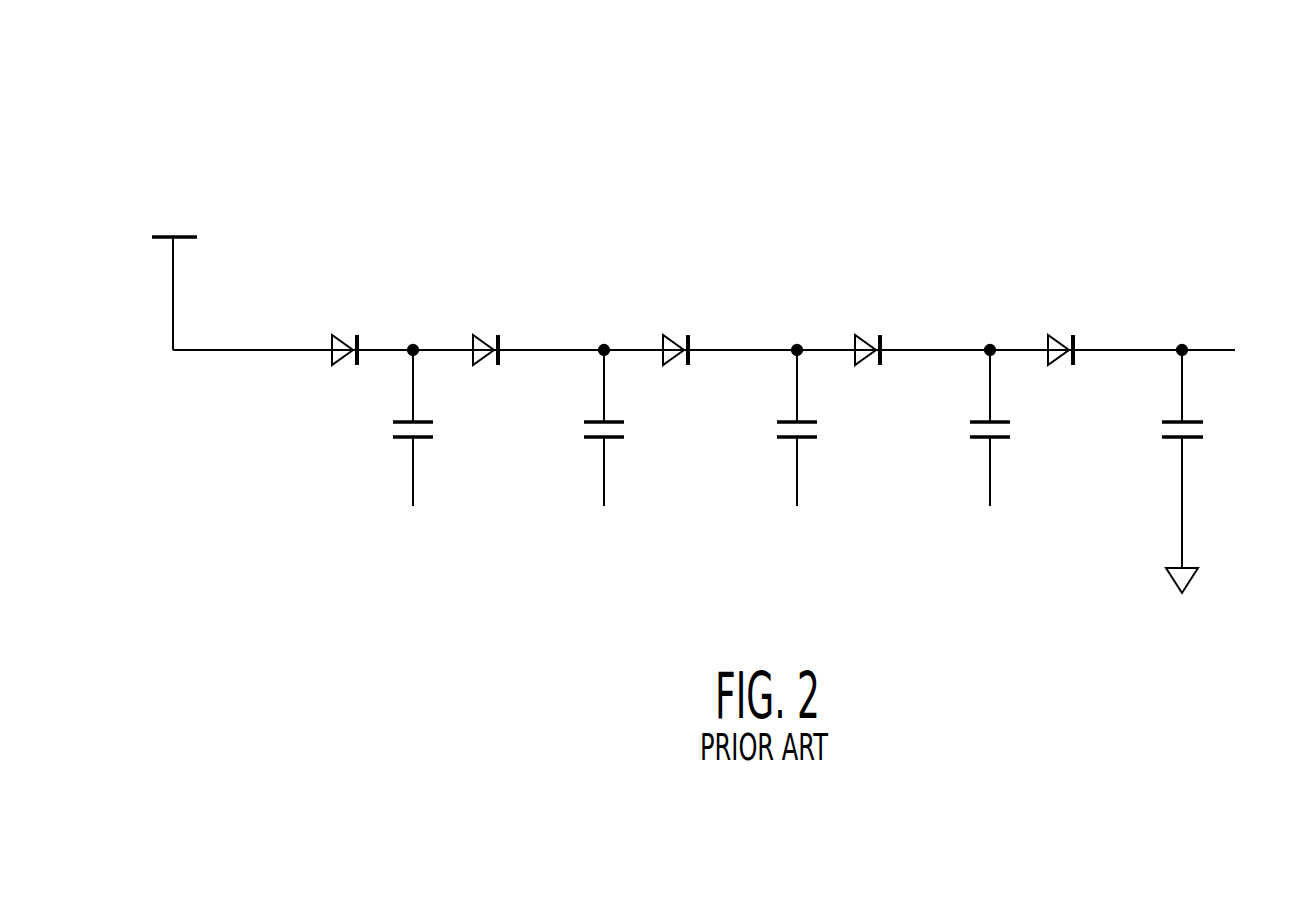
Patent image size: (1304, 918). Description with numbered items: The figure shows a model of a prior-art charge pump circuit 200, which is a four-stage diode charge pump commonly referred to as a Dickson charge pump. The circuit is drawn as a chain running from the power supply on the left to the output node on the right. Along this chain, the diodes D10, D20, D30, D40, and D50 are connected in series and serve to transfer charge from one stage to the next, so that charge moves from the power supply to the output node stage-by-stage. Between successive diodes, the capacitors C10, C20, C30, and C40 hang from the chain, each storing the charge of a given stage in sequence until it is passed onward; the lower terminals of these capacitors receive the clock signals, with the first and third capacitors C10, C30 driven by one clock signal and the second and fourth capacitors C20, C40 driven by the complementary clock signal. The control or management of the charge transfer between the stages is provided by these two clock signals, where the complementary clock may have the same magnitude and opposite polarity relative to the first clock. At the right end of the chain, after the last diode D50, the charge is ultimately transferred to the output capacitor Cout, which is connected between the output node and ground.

The charge pump circuit 200 is at (298, 113).
The diode D10 is at (348, 328).
The diode D20 is at (486, 328).
The diode D30 is at (676, 328).
The diode D40 is at (868, 328).
The diode D50 is at (1060, 328).
The capacitor C10 is at (389, 451).
The capacitor C20 is at (585, 451).
The capacitor C30 is at (773, 451).
The capacitor C40 is at (970, 451).
The output capacitor Cout is at (1154, 471).